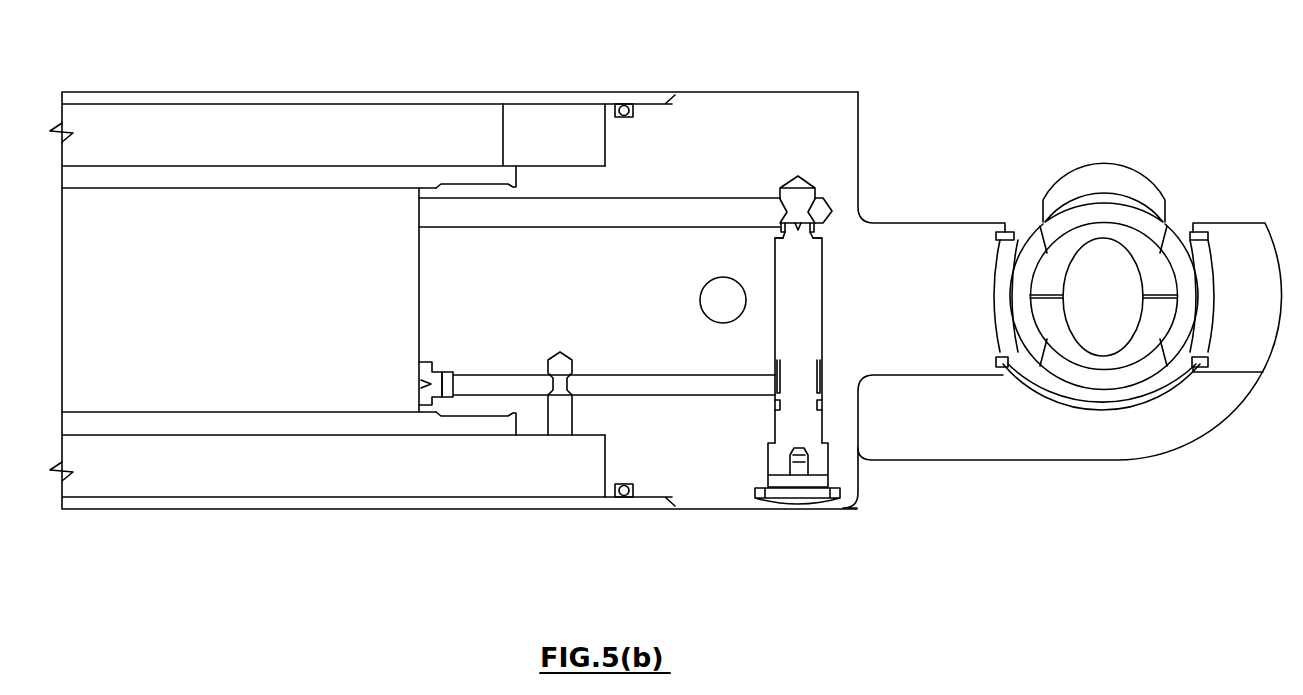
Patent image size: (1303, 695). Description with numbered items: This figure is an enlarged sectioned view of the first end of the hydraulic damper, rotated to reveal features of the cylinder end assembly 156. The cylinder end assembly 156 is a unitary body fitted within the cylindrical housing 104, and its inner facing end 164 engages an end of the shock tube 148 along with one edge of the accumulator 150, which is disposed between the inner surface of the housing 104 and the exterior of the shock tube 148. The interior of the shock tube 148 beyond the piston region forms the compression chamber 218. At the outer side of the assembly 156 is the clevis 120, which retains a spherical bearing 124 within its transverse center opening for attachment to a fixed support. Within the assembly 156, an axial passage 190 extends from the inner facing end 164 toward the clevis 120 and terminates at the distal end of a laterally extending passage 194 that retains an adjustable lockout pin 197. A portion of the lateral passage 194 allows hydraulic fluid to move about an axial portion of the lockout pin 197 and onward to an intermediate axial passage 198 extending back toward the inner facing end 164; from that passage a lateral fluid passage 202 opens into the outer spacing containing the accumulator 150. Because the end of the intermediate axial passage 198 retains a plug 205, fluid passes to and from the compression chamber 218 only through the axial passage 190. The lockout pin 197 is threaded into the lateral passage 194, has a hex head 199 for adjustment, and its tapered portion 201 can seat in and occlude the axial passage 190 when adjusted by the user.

The cylindrical housing 104 is at (466, 96).
The shock tube 148 is at (220, 175).
The accumulator 150 is at (330, 128).
The inner facing end 164 is at (458, 190).
The compression chamber 218 is at (150, 370).
The axial passage 190 is at (700, 210).
The cylinder end assembly 156 is at (843, 110).
The laterally extending passage 194 is at (796, 198).
The tapered portion 201 is at (810, 240).
The adjustable lockout pin 197 is at (805, 347).
The hex head 199 is at (800, 505).
The intermediate axial passage 198 is at (655, 395).
The plug 205 is at (433, 395).
The lateral fluid passage 202 is at (560, 428).
The clevis 120 is at (937, 360).
The spherical bearing 124 is at (1040, 240).